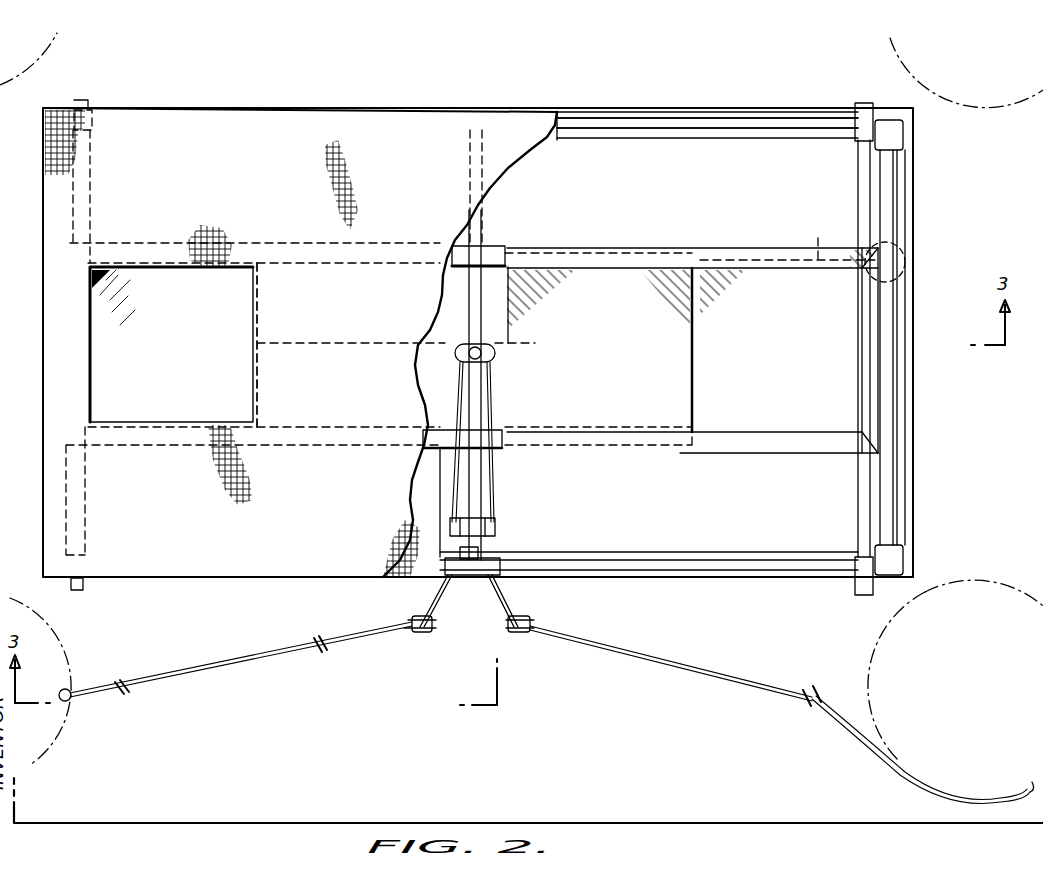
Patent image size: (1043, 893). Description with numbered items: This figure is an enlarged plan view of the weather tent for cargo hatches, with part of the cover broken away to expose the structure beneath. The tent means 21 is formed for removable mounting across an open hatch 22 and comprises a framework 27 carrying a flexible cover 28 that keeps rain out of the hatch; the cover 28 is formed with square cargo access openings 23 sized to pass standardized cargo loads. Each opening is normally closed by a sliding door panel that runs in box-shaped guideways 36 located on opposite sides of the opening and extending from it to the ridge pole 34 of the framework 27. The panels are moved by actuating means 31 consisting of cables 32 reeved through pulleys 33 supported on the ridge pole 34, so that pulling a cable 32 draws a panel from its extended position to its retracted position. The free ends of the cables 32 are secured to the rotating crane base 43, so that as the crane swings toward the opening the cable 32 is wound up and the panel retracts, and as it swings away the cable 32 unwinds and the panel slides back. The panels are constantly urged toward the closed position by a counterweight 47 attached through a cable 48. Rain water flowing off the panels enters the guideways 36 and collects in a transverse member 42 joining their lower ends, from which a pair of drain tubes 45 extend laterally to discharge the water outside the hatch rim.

The tent means 21 is at (258, 106).
The open hatch 22 is at (641, 146).
The cargo access openings 23 is at (262, 308).
The framework 27 is at (742, 124).
The flexible cover 28 is at (397, 219).
The actuating means 31 is at (459, 334).
The cables 32 is at (461, 494).
The pulleys 33 is at (470, 360).
The ridge pole 34 is at (484, 236).
The guideways 36 is at (757, 258).
The transverse member 42 is at (872, 335).
The crane base 43 is at (913, 72).
The drain tubes 45 is at (858, 192).
The counterweight 47 is at (905, 258).
The cable 48 is at (820, 238).